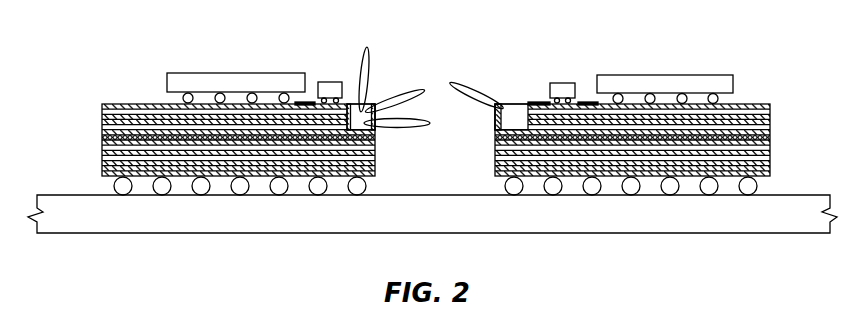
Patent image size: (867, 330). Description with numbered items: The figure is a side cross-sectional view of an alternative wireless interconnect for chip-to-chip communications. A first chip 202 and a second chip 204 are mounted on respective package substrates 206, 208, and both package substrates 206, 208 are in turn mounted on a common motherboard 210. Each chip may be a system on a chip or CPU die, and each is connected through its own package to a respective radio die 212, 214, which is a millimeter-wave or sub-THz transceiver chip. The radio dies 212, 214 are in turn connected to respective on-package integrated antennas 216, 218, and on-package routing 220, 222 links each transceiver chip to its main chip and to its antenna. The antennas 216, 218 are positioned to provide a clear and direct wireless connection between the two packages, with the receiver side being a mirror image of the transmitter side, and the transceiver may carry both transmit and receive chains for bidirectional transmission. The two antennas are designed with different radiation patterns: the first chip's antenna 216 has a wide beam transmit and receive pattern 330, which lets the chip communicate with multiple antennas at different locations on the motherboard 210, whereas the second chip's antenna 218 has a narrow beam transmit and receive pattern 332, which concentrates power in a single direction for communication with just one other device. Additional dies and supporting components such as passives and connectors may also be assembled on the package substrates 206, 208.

The first chip 202 is at (215, 73).
The second chip 204 is at (682, 75).
The first package substrate 206 is at (115, 103).
The second package substrate 208 is at (760, 104).
The motherboard 210 is at (817, 195).
The first radio die 212 is at (334, 82).
The second radio die 214 is at (562, 83).
The first antenna 216 is at (373, 107).
The second antenna 218 is at (511, 111).
The on-package routing 220 is at (305, 101).
The on-package routing 222 is at (539, 102).
The wide beam transmit and receive pattern 330 is at (374, 63).
The narrow beam transmit and receive pattern 332 is at (469, 102).